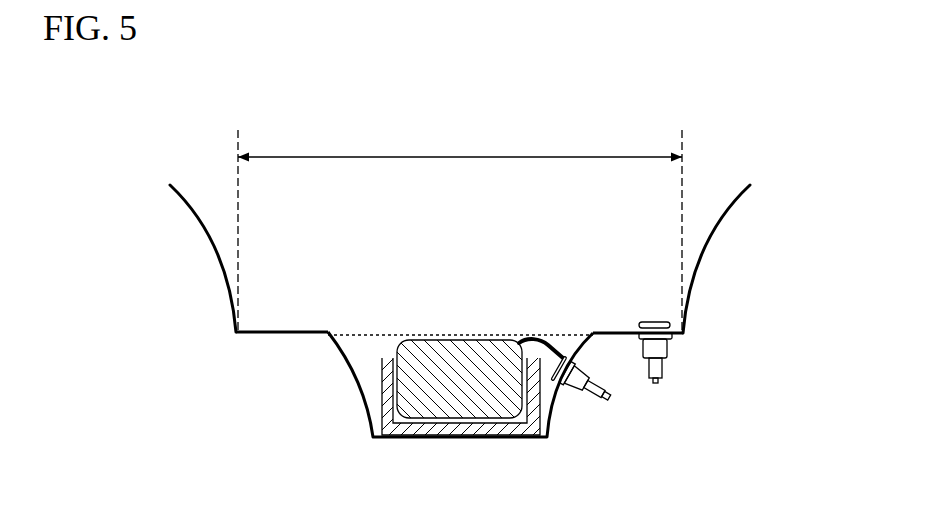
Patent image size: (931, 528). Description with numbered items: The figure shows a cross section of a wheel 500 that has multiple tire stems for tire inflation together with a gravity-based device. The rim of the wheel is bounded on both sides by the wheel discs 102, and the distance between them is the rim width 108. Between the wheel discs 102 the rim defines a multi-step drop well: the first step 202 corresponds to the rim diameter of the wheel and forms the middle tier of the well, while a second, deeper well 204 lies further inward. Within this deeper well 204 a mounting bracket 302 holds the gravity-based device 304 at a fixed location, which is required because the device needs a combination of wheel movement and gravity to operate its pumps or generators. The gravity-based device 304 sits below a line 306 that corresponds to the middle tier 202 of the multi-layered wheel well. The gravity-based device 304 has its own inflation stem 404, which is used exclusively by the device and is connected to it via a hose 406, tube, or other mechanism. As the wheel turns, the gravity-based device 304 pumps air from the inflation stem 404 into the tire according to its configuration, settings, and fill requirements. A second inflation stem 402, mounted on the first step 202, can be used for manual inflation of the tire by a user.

The wheel 500 is at (294, 106).
The rim width 108 is at (536, 155).
The wheel discs 102 is at (172, 186).
The first step/drop 202 is at (272, 334).
The second, deeper well 204 is at (466, 440).
The mounting bracket 302 is at (383, 410).
The gravity-based device 304 is at (395, 347).
The line 306 is at (392, 334).
The inflation stem 402 is at (662, 374).
The inflation stem 404 is at (602, 398).
The hose 406 is at (540, 336).